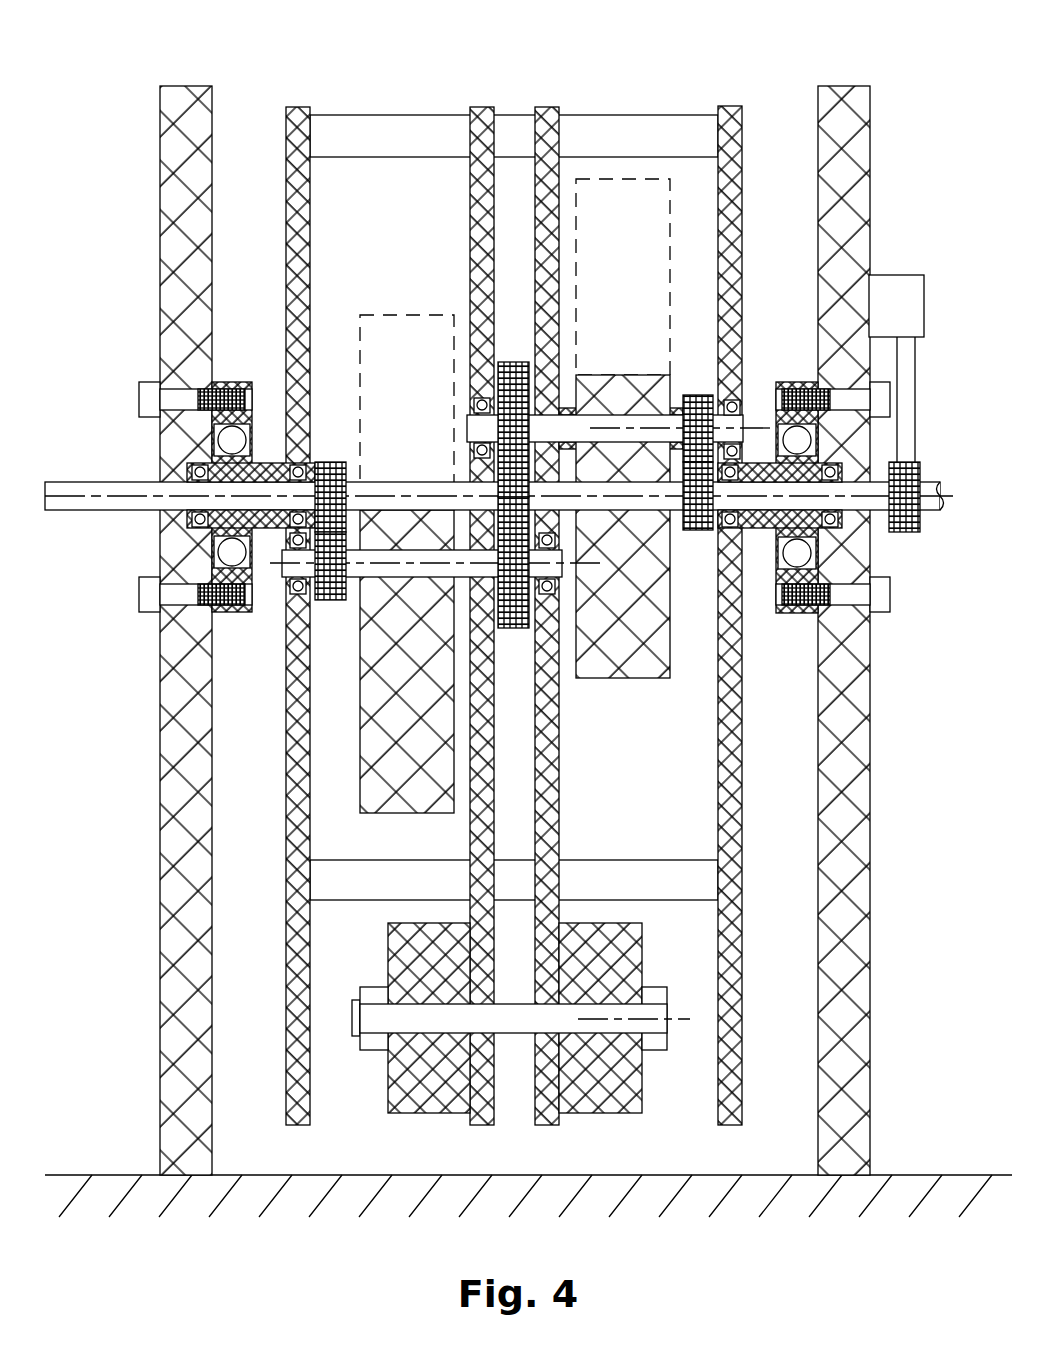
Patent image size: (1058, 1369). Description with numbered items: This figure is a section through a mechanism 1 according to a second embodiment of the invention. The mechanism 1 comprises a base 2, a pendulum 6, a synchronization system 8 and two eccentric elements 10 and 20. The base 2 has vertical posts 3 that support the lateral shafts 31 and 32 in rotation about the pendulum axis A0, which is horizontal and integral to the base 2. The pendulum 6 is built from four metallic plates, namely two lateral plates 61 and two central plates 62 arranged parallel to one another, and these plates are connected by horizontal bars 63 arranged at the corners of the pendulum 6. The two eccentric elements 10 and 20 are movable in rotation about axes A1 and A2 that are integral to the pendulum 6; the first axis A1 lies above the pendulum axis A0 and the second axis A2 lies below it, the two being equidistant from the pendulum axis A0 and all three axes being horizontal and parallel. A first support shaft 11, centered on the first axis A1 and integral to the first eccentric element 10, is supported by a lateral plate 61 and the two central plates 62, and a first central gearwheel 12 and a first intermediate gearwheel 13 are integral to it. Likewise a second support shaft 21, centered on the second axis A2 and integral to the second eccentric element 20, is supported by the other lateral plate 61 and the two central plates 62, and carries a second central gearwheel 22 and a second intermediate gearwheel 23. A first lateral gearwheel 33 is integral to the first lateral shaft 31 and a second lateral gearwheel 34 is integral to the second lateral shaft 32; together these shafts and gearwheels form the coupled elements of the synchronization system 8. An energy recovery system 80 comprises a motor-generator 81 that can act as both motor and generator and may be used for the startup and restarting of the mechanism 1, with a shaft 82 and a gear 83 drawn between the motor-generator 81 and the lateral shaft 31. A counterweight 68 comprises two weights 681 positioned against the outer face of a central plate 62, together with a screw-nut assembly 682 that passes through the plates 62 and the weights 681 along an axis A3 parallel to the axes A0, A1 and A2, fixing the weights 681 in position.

The mechanism 1 is at (111, 70).
The base 2 is at (121, 286).
The vertical posts 3 is at (160, 1040).
The pendulum 6 is at (256, 102).
The synchronization system 8 is at (135, 546).
The first eccentric element 10 is at (616, 678).
The first support shaft 11 is at (616, 430).
The first central gearwheel 12 is at (516, 376).
The first intermediate gearwheel 13 is at (696, 404).
The second eccentric element 20 is at (414, 794).
The second support shaft 21 is at (418, 562).
The second central gearwheel 22 is at (518, 616).
The second intermediate gearwheel 23 is at (330, 600).
The first lateral shaft 31 is at (926, 508).
The second lateral shaft 32 is at (138, 482).
The first lateral gearwheel 33 is at (702, 512).
The second lateral gearwheel 34 is at (330, 462).
The lateral plates 61 is at (298, 117).
The central plates 62 is at (484, 128).
The horizontal bars 63 is at (400, 128).
The counterweight 68 is at (380, 1118).
The energy recovery system 80 is at (904, 258).
The motor-generator 81 is at (936, 304).
The motor shaft 82 is at (916, 404).
The motor pinion 83 is at (920, 474).
The weights 681 is at (430, 1096).
The screw-nut assembly 682 is at (654, 1000).
The pendulum axis A0 is at (80, 480).
The first axis A1 is at (760, 428).
The second axis A2 is at (276, 566).
The axis A3 is at (686, 1026).